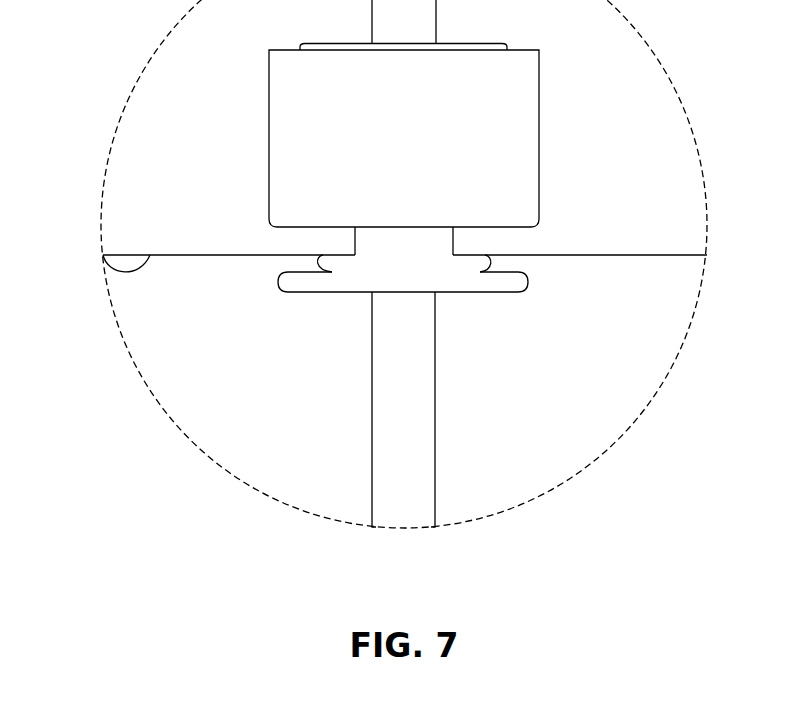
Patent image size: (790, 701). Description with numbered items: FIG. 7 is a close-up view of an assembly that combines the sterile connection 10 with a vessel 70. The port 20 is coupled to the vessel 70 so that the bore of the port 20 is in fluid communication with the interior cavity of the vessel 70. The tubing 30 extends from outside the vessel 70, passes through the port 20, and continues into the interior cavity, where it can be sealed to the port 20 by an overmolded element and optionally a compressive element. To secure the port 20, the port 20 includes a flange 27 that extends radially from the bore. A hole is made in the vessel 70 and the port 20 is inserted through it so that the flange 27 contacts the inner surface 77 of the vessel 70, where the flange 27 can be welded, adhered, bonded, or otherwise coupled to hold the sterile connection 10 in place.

The sterile connection 10 is at (568, 103).
The port 20 is at (442, 252).
The flange 27 is at (332, 262).
The tubing 30 is at (412, 508).
The vessel 70 is at (135, 345).
The inner surface 77 is at (103, 255).